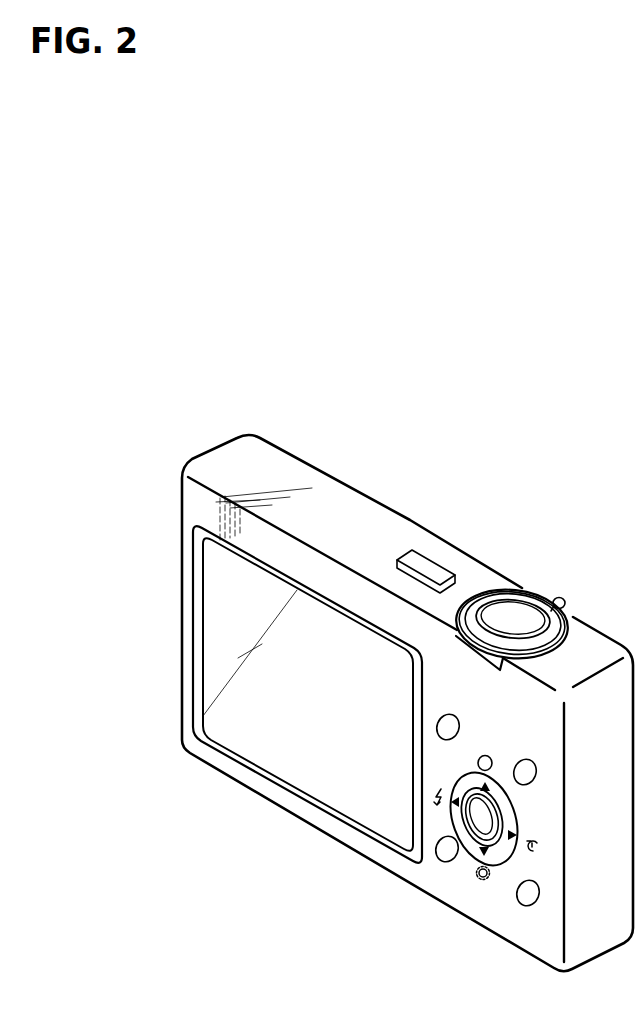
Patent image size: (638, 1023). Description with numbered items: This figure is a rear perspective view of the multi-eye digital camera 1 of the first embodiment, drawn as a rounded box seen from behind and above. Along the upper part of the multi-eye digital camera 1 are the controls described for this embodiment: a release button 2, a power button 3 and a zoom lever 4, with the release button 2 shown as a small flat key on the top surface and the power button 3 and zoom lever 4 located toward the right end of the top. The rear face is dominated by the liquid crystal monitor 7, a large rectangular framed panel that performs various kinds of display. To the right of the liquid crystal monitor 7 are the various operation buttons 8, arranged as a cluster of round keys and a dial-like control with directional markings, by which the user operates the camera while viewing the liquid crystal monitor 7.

The multi-eye digital camera 1 is at (345, 505).
The release button 2 is at (509, 612).
The power button 3 is at (428, 568).
The zoom lever 4 is at (556, 598).
The liquid crystal monitor 7 is at (232, 632).
The operation buttons 8 is at (436, 815).